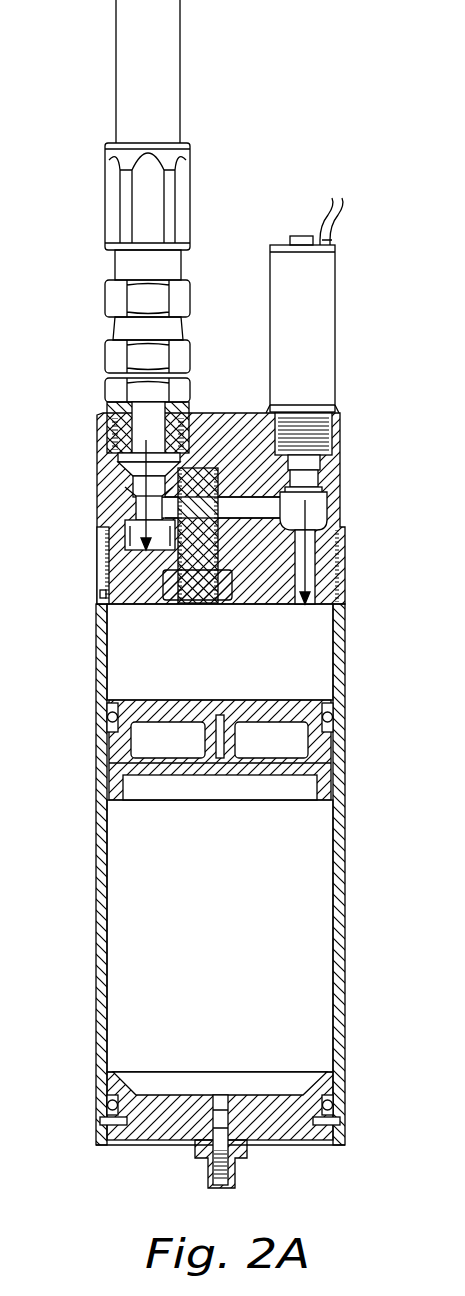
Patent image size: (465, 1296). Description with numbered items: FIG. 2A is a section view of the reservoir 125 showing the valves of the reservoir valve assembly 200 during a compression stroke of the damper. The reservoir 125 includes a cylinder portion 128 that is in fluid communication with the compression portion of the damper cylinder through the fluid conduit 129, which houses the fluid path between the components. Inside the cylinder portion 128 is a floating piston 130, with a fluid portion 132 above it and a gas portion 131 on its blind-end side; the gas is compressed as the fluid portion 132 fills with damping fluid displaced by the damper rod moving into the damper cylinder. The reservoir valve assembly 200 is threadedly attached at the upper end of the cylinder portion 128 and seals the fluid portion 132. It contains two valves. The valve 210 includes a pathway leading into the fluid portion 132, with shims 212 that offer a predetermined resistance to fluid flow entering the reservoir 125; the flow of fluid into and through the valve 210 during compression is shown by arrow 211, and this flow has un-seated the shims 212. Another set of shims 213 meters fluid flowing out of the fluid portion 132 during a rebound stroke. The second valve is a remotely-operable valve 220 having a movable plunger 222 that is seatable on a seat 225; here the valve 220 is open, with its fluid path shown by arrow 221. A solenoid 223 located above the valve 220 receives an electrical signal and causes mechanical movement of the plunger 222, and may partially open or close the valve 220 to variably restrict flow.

The reservoir 125 is at (228, 594).
The fluid conduit 129 is at (135, 89).
The solenoid 223 is at (320, 329).
The reservoir valve assembly 200 is at (228, 509).
The valve 210 is at (135, 488).
The arrow 211 is at (128, 513).
The shims 212 is at (140, 565).
The shims 213 is at (247, 520).
The plunger 222 is at (310, 469).
The remotely-operable valve 220 is at (305, 505).
The seat 225 is at (300, 526).
The arrow 221 is at (300, 573).
The cylinder portion 128 is at (259, 896).
The fluid portion 132 is at (302, 664).
The floating piston 130 is at (320, 753).
The gas portion 131 is at (302, 973).